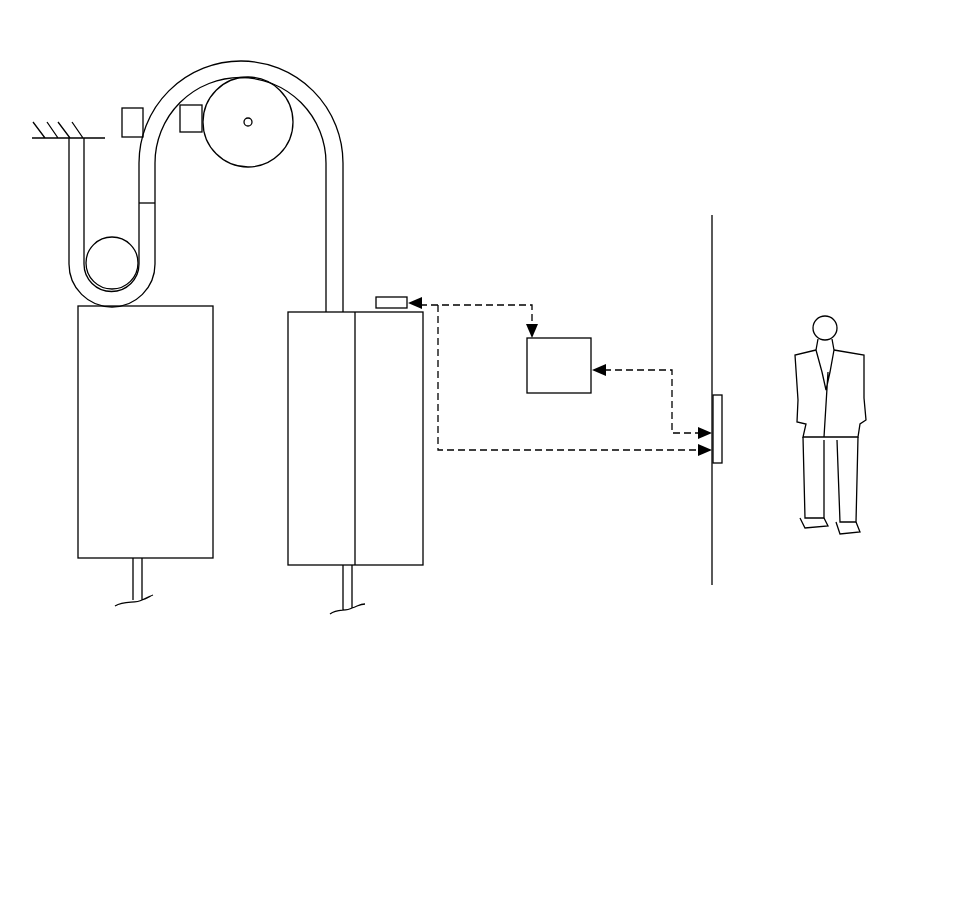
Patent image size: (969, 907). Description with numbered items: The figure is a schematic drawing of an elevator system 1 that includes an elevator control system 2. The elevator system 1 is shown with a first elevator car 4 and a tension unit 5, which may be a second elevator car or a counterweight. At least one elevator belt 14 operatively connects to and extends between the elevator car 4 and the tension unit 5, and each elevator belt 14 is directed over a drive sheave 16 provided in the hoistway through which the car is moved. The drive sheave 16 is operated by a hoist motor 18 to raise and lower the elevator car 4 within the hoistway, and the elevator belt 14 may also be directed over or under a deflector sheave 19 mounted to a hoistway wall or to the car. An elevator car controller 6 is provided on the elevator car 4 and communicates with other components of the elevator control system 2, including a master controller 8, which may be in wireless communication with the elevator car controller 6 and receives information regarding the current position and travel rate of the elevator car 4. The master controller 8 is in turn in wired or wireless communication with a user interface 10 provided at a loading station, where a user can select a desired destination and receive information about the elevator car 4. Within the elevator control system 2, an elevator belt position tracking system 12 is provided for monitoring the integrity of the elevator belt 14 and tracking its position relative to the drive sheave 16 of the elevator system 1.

The elevator system 1 is at (562, 92).
The elevator control system 2 is at (446, 252).
The elevator car 4 is at (288, 398).
The tension unit 5 is at (78, 415).
The elevator car controller 6 is at (393, 296).
The master controller 8 is at (567, 338).
The user interface 10 is at (722, 408).
The elevator belt position tracking system 12 is at (190, 105).
The elevator belt 14 is at (343, 170).
The drive sheave 16 is at (278, 107).
The hoist motor 18 is at (250, 126).
The deflector sheave 19 is at (132, 267).